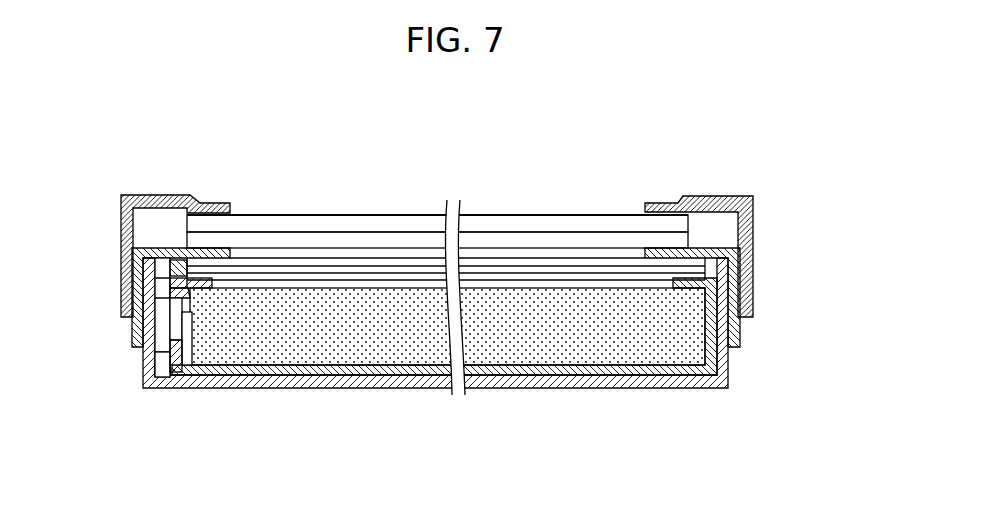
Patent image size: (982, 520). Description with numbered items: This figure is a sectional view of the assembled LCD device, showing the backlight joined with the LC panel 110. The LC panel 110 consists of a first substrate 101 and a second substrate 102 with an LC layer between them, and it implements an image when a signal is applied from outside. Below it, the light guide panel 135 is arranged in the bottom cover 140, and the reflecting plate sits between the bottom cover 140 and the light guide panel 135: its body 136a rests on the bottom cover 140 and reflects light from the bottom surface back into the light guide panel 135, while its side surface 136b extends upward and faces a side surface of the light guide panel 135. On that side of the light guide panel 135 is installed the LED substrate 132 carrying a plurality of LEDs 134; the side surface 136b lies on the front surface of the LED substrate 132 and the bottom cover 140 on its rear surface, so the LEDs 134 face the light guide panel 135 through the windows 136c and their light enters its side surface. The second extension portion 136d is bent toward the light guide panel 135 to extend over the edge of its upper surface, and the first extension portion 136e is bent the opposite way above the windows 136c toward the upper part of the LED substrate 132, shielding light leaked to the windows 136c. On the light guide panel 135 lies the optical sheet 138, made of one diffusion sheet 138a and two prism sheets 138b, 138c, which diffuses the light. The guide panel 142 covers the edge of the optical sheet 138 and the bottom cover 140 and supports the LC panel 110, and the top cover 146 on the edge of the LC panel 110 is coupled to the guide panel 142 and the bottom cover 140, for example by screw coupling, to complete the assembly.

The first substrate 101 is at (300, 237).
The second substrate 102 is at (330, 222).
The LC panel 110 is at (437, 198).
The LED substrate 132 is at (165, 363).
The LEDs 134 is at (195, 373).
The light guide panel 135 is at (333, 347).
The body 136a is at (267, 370).
The side surface 136b is at (172, 348).
The windows 136c is at (165, 333).
The second extension portion 136d is at (165, 257).
The first extension portion 136e is at (173, 287).
The optical sheet 138 is at (446, 206).
The diffusion sheet 138a is at (462, 163).
The prism sheet 138b is at (520, 268).
The prism sheet 138c is at (495, 260).
The bottom cover 140 is at (727, 366).
The guide panel 142 is at (738, 330).
The top cover 146 is at (719, 196).